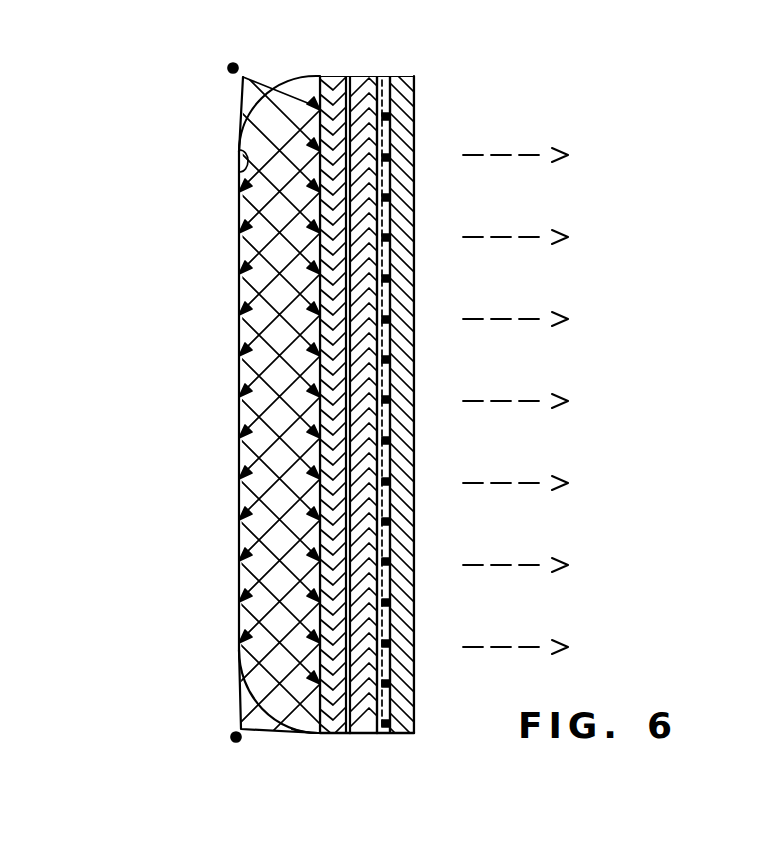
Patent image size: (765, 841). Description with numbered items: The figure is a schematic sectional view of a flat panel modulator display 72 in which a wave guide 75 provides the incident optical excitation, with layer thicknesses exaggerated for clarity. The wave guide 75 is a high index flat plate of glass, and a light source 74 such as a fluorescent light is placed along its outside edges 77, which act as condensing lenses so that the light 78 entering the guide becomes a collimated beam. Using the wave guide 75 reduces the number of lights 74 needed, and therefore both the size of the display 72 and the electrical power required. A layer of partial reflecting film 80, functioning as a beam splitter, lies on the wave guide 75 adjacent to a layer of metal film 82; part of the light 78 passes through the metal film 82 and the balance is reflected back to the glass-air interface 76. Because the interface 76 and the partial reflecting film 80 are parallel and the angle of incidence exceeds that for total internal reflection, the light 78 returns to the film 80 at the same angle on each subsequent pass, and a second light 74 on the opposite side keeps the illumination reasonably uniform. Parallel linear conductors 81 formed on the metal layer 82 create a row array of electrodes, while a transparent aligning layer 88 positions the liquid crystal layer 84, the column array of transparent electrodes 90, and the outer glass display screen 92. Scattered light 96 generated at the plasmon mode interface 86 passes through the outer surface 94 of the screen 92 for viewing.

The display 72 is at (145, 421).
The light source 74 is at (230, 65).
The wave guide 75 is at (239, 264).
The glass-air interface 76 is at (240, 153).
The outside edges 77 is at (303, 733).
The light 78 is at (278, 103).
The partial reflecting film 80 is at (327, 75).
The parallel linear conductors 81 is at (340, 78).
The metal film 82 is at (342, 735).
The liquid crystal layer 84 is at (365, 735).
The plasmon mode interface 86 is at (349, 77).
The transparent aligning layer 88 is at (378, 77).
The column array of transparent electrodes 90 is at (388, 733).
The outer glass display screen 92 is at (405, 98).
The outer surface 94 is at (416, 164).
The scattered light 96 is at (508, 403).